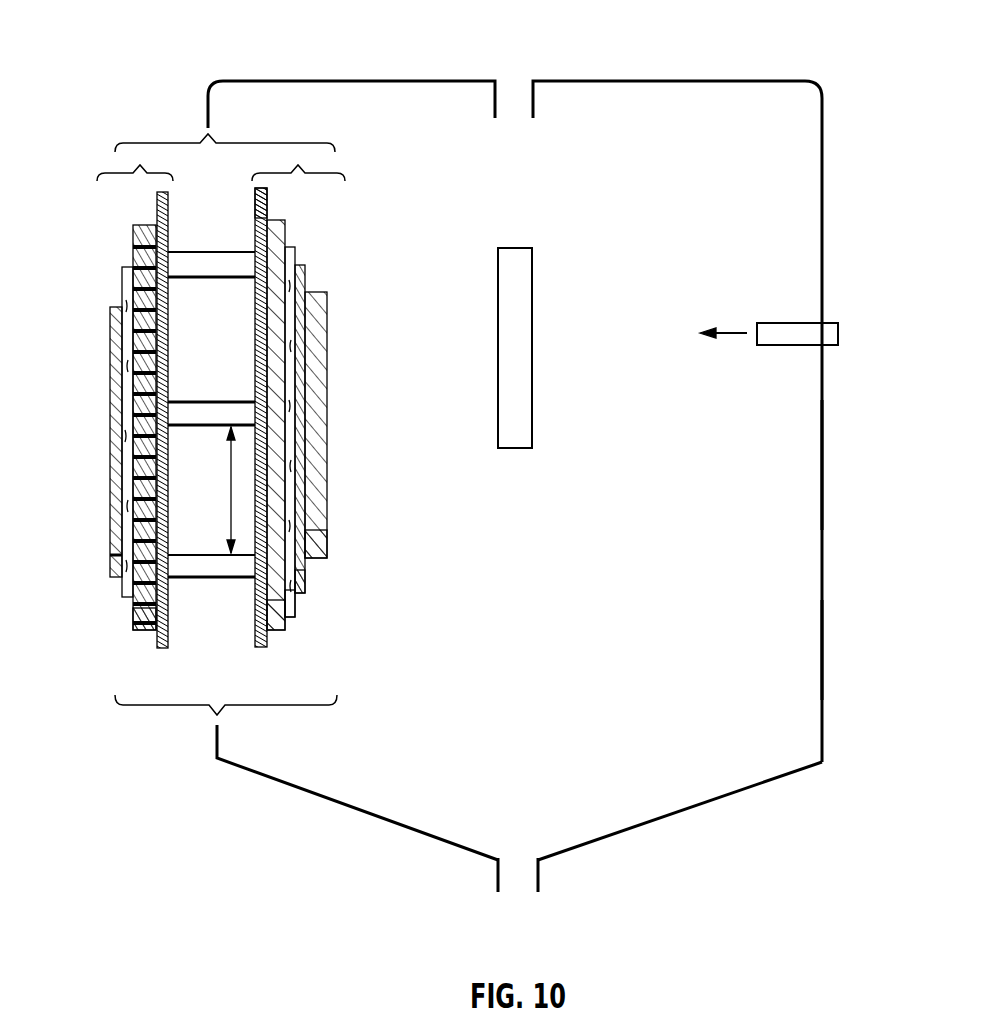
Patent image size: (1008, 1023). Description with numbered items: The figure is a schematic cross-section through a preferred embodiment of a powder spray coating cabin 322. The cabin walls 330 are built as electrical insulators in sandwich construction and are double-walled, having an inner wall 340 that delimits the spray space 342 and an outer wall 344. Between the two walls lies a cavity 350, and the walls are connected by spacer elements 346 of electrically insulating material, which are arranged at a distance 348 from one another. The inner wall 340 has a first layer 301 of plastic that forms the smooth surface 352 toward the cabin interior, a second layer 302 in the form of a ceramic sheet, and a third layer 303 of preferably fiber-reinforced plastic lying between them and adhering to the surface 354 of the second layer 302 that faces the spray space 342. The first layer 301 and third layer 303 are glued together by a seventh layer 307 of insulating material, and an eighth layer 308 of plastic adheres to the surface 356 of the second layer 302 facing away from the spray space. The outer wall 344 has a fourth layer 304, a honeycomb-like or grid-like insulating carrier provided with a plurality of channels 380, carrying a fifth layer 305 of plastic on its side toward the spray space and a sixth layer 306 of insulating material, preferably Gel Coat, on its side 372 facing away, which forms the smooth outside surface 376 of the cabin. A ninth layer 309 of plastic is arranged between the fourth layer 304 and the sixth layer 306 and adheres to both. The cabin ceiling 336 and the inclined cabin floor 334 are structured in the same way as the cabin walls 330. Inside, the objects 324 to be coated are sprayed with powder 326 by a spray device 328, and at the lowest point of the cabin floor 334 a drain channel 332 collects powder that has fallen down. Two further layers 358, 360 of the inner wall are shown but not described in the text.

The first layer 301 is at (325, 540).
The second layer 302 is at (287, 627).
The third layer 303 is at (297, 610).
The fourth layer 304 is at (140, 622).
The fifth layer 305 is at (158, 640).
The sixth layer 306 is at (118, 557).
The seventh layer 307 is at (305, 585).
The eighth layer 308 is at (268, 640).
The ninth layer 309 is at (130, 590).
The cabin 322 is at (823, 655).
The objects to be coated 324 is at (522, 287).
The powder 326 is at (733, 333).
The spray device 328 is at (835, 345).
The cabin walls 330 is at (208, 110).
The drain channel 332 is at (518, 880).
The cabin floor 334 is at (360, 810).
The cabin ceiling 336 is at (362, 81).
The inner wall 340 is at (298, 165).
The spray space 342 is at (800, 465).
The outer wall 344 is at (140, 165).
The spacer elements 346 is at (213, 268).
The distance 348 is at (231, 497).
The cavity 350 is at (196, 540).
The smooth surface 352 is at (325, 330).
The surface of the second layer 354 is at (290, 225).
The surface of the second layer 356 is at (270, 215).
The hatched layer 358 is at (305, 287).
The thin electrode layer 360 is at (297, 258).
The side of the fourth layer 372 is at (133, 235).
The smooth surface 376 is at (110, 365).
The channels 380 is at (133, 255).